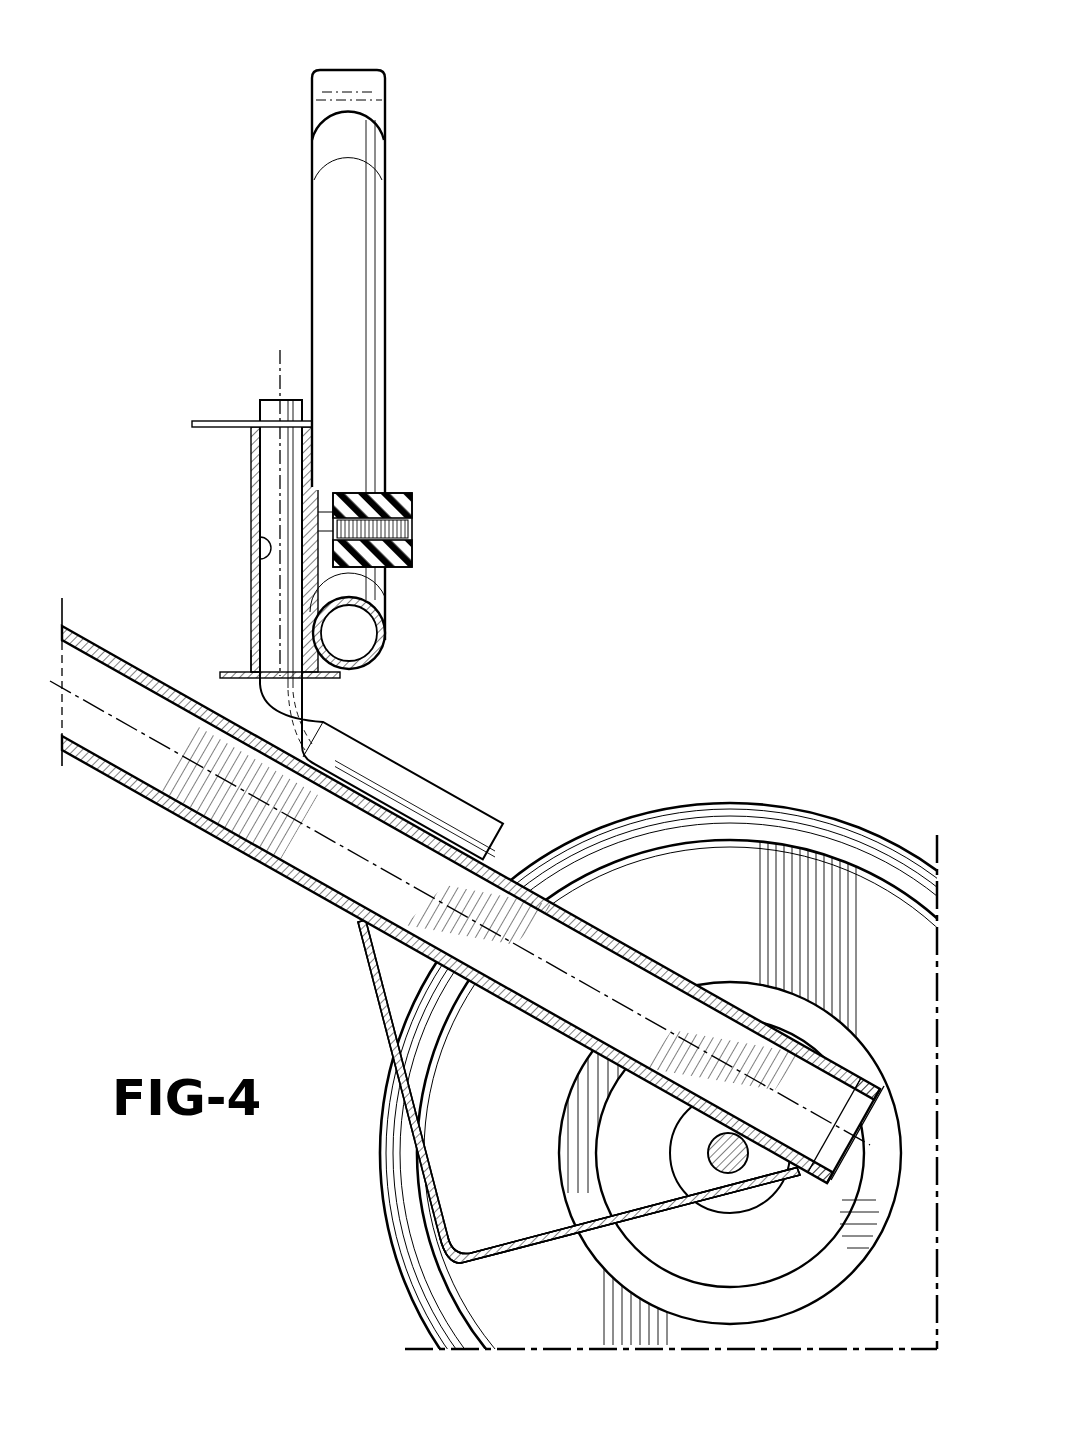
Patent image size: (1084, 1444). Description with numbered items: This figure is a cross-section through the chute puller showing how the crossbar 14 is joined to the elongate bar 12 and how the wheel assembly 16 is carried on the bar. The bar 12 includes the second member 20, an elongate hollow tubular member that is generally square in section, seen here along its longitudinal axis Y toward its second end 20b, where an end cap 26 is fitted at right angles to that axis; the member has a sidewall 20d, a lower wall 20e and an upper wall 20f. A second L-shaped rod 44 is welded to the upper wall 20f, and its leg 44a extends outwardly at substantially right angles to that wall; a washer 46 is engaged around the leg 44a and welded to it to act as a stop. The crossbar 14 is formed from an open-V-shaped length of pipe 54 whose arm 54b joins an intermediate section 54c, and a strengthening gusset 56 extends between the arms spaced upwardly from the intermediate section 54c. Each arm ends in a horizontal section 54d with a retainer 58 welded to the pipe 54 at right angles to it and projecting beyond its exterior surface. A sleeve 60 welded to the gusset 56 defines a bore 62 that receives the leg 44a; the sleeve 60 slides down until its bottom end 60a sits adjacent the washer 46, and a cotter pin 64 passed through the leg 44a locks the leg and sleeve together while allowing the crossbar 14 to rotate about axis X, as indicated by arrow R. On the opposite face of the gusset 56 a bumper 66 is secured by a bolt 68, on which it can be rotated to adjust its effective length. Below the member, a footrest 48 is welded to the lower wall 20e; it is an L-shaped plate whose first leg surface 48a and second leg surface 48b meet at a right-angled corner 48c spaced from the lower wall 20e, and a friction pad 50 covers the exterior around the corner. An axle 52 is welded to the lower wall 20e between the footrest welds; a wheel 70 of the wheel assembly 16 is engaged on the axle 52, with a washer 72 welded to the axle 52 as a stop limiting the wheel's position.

The elongate bar 12 is at (120, 780).
The crossbar 14 is at (415, 336).
The wheel assembly 16 is at (730, 1069).
The second member 20 is at (488, 866).
The second end 20b is at (866, 1082).
The sidewall 20d is at (290, 842).
The lower wall 20e is at (220, 828).
The upper wall 20f is at (625, 944).
The end cap 26 is at (882, 1108).
The second L-shaped rod 44 is at (330, 629).
The leg 44a is at (270, 506).
The washer 46 is at (238, 672).
The footrest 48 is at (529, 1120).
The first leg surface 48a is at (373, 995).
The second leg surface 48b is at (657, 1206).
The corner 48c is at (462, 1256).
The friction pad 50 is at (500, 1264).
The axle 52 is at (718, 1150).
The pipe 54 is at (405, 336).
The arm 54b is at (350, 278).
The intermediate section 54c is at (385, 638).
The horizontal section 54d is at (357, 115).
The strengthening gusset 56 is at (320, 470).
The retainer 58 is at (350, 78).
The sleeve 60 is at (297, 525).
The bottom end 60a is at (250, 668).
The bore 62 is at (265, 548).
The cotter pin 64 is at (215, 425).
The bumper 66 is at (412, 512).
The bolt 68 is at (412, 543).
The wheel 70 is at (838, 838).
The washer 72 is at (748, 1195).